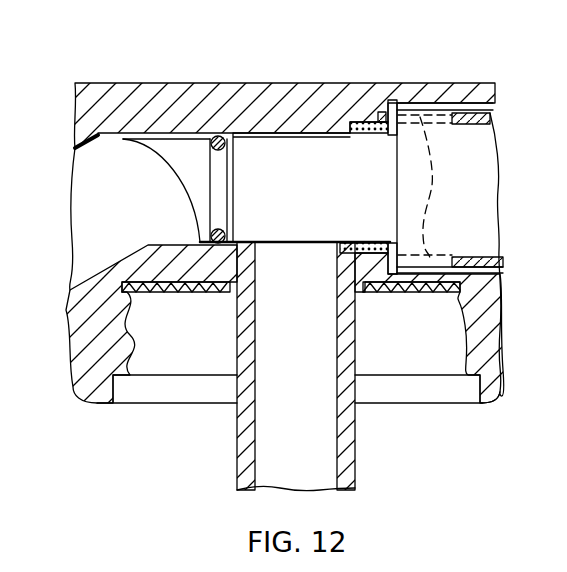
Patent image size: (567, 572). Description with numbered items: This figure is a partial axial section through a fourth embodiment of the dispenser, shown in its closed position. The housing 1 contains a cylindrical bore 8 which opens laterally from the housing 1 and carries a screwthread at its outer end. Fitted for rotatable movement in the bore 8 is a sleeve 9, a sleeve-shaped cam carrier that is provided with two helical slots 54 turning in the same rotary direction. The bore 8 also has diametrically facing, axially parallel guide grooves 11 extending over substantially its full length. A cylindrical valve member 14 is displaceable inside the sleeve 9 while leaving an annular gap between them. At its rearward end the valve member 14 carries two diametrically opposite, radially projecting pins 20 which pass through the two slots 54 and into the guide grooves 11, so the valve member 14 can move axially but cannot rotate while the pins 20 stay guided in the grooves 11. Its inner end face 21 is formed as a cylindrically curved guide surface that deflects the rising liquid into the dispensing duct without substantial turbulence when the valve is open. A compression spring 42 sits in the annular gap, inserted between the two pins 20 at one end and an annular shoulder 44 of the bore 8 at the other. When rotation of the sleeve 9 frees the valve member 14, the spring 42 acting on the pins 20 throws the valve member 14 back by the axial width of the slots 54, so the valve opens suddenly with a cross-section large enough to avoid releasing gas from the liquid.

The housing 1 is at (495, 333).
The cylindrical bore 8 is at (408, 283).
The sleeve 9 is at (492, 115).
The guide grooves 11 is at (430, 110).
The valve member 14 is at (308, 212).
The pins 20 is at (394, 105).
The inner end face 21 is at (148, 157).
The compression spring 42 is at (368, 122).
The annular shoulder 44 is at (345, 125).
The helical slots 54 is at (435, 190).